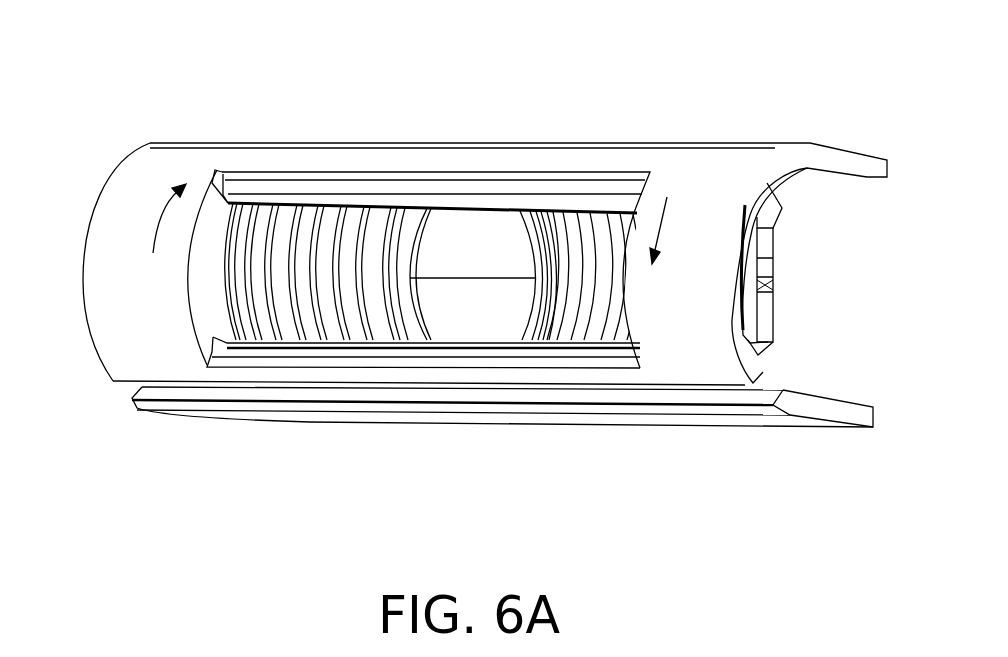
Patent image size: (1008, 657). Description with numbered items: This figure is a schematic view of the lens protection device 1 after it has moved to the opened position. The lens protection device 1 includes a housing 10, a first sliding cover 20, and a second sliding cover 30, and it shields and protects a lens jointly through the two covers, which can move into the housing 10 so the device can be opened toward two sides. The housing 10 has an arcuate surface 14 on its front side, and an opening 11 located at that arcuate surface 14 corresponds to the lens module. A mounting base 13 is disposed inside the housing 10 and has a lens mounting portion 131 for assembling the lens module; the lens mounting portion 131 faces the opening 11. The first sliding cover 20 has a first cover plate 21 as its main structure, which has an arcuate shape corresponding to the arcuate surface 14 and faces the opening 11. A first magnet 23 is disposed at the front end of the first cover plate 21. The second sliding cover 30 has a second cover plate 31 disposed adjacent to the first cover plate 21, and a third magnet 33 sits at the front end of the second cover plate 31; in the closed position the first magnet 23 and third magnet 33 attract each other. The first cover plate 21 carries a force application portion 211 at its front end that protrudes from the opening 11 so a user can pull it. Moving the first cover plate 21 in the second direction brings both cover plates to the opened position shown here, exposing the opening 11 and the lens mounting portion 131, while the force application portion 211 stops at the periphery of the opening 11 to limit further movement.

The lens protection device 1 is at (97, 36).
The housing 10 is at (140, 170).
The opening 11 is at (257, 150).
The mounting base 13 is at (748, 257).
The arcuate surface 14 is at (688, 163).
The first sliding cover 20 is at (300, 185).
The first cover plate 21 is at (502, 188).
The force application portion 211 is at (573, 182).
The first magnet 23 is at (375, 197).
The lens mounting portion 131 is at (417, 232).
The second sliding cover 30 is at (390, 355).
The second cover plate 31 is at (307, 353).
The third magnet 33 is at (233, 343).